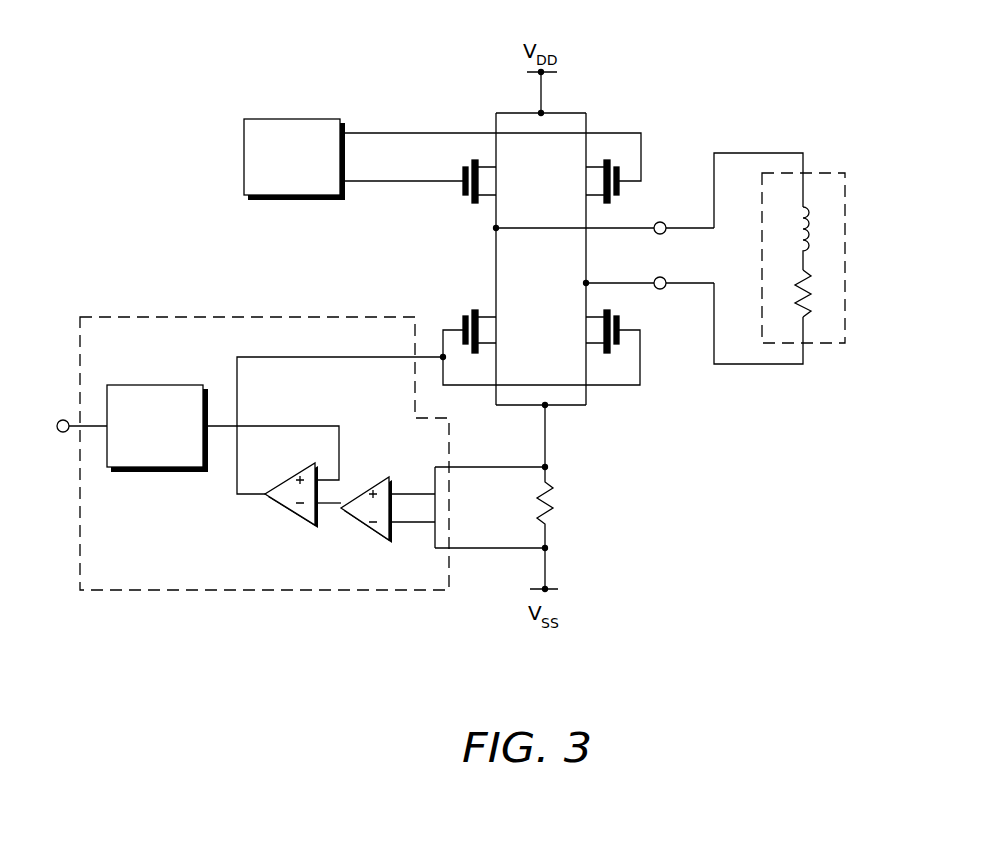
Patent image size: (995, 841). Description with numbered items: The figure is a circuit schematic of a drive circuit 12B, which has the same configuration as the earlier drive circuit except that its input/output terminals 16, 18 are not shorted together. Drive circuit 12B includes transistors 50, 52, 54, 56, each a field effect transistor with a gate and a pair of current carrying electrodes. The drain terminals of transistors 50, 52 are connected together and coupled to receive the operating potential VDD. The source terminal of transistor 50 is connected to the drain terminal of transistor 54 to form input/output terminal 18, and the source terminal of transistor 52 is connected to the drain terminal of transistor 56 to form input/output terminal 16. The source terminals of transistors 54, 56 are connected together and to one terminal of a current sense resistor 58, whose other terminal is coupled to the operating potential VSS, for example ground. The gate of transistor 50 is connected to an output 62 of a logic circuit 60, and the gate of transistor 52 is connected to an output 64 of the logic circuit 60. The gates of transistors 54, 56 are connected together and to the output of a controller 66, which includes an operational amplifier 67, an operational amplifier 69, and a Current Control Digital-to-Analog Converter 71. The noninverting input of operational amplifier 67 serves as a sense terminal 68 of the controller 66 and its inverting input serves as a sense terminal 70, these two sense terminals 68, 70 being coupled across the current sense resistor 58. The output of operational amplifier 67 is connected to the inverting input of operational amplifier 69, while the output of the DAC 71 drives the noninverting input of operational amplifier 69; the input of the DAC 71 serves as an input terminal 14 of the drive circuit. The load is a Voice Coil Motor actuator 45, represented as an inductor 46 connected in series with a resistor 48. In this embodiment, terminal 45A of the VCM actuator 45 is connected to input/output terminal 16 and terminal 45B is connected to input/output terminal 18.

The drive circuit 12B is at (654, 676).
The input terminal 14 is at (60, 420).
The input/output terminal 16 is at (622, 283).
The input/output terminal 18 is at (622, 228).
The Voice Coil Motor actuator 45 is at (823, 255).
The terminal 45A is at (775, 153).
The terminal 45B is at (772, 364).
The inductor 46 is at (806, 226).
The resistor 48 is at (810, 300).
The transistor 50 is at (486, 181).
The transistor 52 is at (597, 181).
The transistor 54 is at (488, 330).
The transistor 56 is at (594, 330).
The current sense resistor 58 is at (552, 495).
The logic circuit 60 is at (271, 119).
The output 62 is at (375, 181).
The output 64 is at (392, 133).
The controller 66 is at (158, 317).
The operational amplifier 67 is at (366, 529).
The sense terminal 68 is at (475, 467).
The operational amplifier 69 is at (290, 511).
The sense terminal 70 is at (470, 548).
The Current Control Digital-to-Analog Converter 71 is at (140, 385).